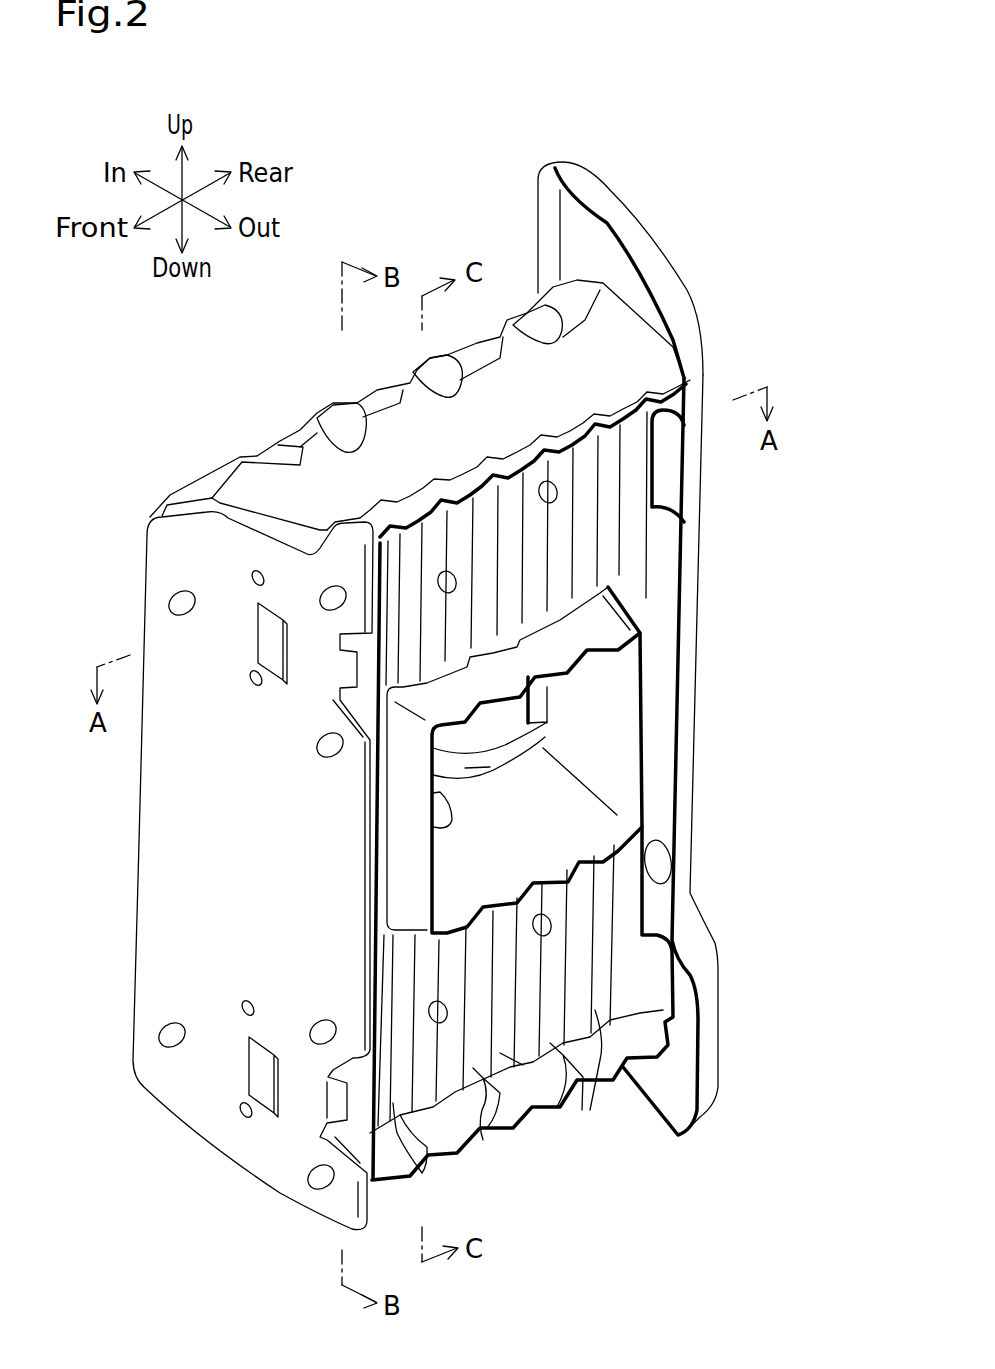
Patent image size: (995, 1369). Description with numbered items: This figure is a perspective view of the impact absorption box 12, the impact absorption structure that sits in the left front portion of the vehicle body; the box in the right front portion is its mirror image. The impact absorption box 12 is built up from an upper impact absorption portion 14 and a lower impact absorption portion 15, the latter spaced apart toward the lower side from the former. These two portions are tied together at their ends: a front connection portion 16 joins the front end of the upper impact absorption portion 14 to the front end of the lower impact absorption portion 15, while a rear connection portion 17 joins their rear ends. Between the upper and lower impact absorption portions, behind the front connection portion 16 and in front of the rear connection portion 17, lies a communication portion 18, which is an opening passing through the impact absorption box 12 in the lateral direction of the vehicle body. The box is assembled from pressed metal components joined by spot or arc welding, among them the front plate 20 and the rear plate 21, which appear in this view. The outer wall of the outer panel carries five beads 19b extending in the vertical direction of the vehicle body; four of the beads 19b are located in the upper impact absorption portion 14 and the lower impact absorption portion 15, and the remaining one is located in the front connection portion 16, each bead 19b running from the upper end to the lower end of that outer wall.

The impact absorption box 12 is at (178, 411).
The upper impact absorption portion 14 is at (362, 401).
The lower impact absorption portion 15 is at (483, 1128).
The front connection portion 16 is at (382, 802).
The rear connection portion 17 is at (663, 732).
The communication portion 18 is at (548, 817).
The beads 19b is at (418, 1168).
The front plate 20 is at (155, 574).
The rear plate 21 is at (617, 207).